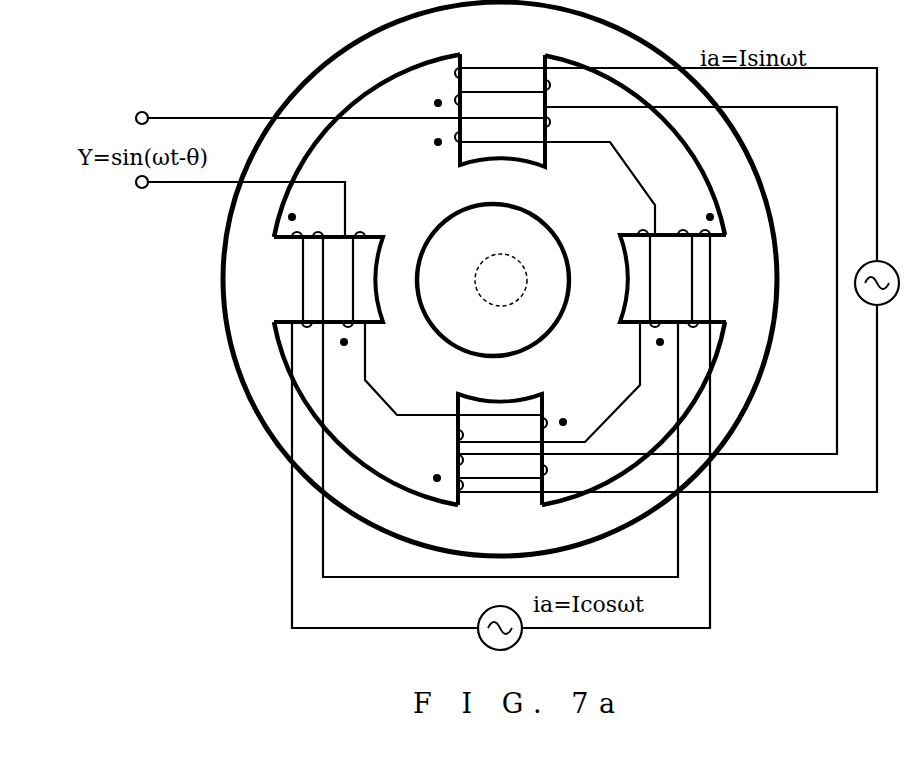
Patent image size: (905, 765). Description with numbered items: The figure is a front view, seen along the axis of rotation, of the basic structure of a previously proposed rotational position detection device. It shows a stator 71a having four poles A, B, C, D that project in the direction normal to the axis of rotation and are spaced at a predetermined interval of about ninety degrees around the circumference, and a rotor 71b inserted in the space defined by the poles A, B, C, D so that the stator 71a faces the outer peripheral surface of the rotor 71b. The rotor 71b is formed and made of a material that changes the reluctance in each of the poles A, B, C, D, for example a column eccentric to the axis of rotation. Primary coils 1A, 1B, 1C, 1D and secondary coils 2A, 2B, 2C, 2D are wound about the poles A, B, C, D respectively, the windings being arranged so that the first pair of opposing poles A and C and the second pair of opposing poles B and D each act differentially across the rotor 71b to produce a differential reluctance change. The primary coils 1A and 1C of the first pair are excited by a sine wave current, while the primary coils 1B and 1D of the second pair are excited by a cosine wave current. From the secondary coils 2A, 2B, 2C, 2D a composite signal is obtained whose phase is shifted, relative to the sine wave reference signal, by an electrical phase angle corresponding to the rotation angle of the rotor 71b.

The stator 71a is at (348, 49).
The rotor 71b is at (537, 338).
The pole A is at (507, 160).
The pole B is at (620, 287).
The pole C is at (497, 398).
The pole D is at (375, 275).
The primary coil 1A is at (453, 72).
The secondary coil 2A is at (550, 122).
The primary coil 1B is at (683, 228).
The secondary coil 2B is at (653, 337).
The primary coil 1C is at (450, 460).
The secondary coil 2C is at (565, 421).
The primary coil 1D is at (325, 236).
The secondary coil 2D is at (352, 348).